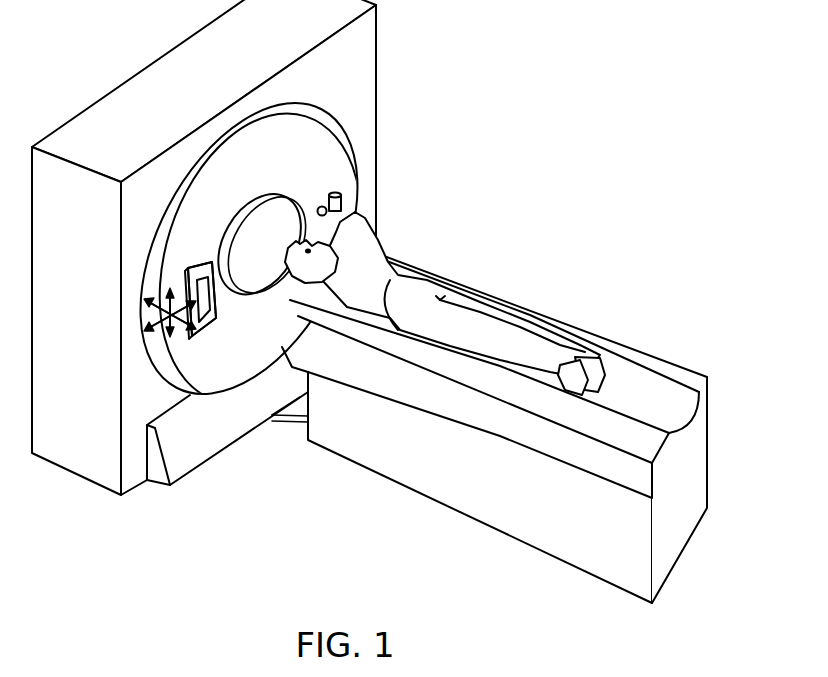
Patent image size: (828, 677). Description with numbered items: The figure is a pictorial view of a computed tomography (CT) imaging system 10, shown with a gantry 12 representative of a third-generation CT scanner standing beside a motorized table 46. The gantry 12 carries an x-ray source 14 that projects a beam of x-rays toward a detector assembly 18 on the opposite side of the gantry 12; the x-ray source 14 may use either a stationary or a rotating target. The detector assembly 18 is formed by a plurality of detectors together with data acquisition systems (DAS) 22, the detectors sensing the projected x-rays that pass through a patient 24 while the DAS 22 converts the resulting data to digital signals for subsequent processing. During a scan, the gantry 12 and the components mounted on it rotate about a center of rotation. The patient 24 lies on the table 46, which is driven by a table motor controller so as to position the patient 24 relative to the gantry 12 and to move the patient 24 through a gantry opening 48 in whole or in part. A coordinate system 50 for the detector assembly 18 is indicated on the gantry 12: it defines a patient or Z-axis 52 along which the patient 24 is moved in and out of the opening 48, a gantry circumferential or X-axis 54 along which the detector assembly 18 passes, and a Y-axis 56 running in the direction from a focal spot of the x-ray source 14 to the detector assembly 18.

The computed tomography (CT) imaging system 10 is at (322, 247).
The gantry 12 is at (297, 162).
The x-ray source 14 is at (346, 207).
The detector assembly 18 is at (213, 328).
The data acquisition systems (DAS) 22 is at (205, 262).
The patient 24 is at (380, 270).
The motorized table 46 is at (458, 496).
The gantry opening 48 is at (249, 219).
The coordinate system 50 is at (132, 306).
The Z-axis 52 is at (148, 276).
The X-axis 54 is at (172, 255).
The Y-axis 56 is at (126, 331).